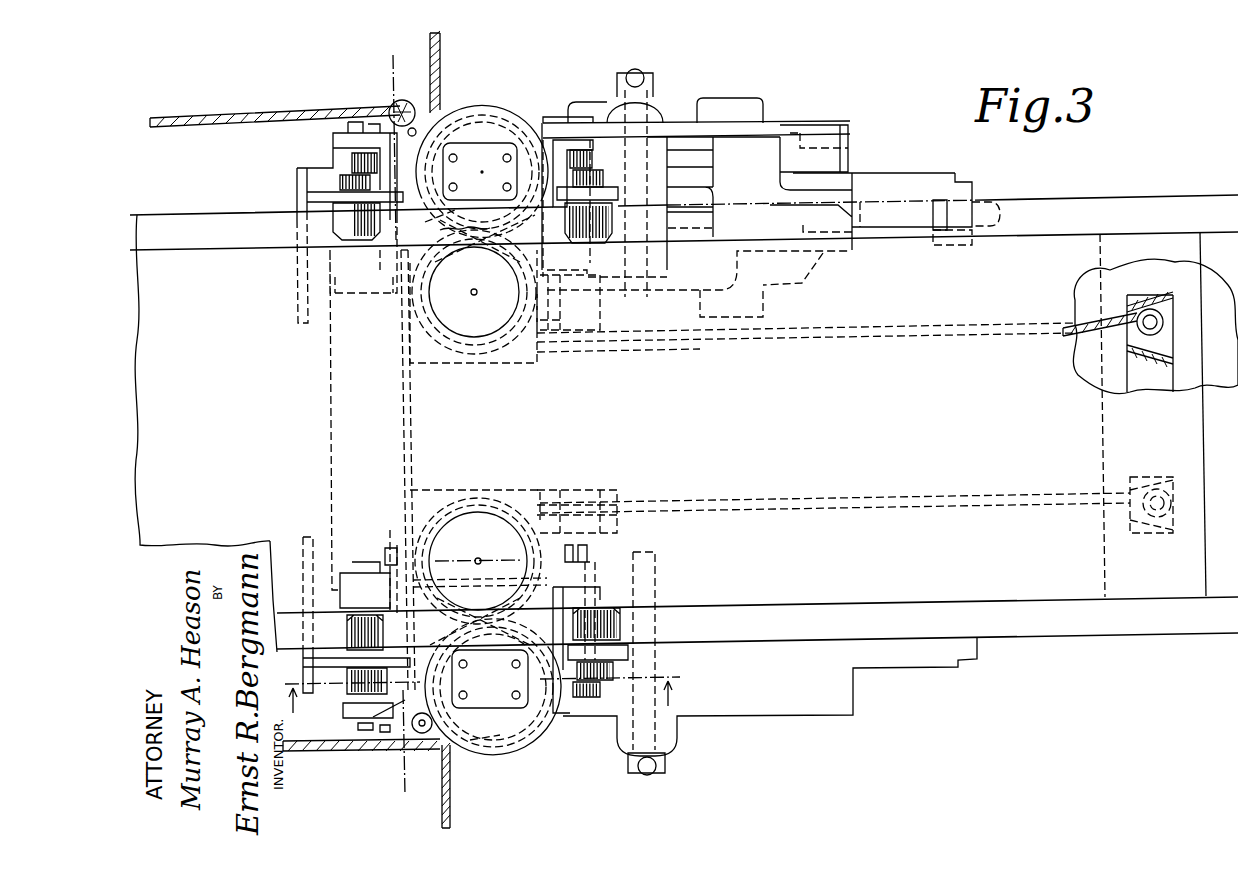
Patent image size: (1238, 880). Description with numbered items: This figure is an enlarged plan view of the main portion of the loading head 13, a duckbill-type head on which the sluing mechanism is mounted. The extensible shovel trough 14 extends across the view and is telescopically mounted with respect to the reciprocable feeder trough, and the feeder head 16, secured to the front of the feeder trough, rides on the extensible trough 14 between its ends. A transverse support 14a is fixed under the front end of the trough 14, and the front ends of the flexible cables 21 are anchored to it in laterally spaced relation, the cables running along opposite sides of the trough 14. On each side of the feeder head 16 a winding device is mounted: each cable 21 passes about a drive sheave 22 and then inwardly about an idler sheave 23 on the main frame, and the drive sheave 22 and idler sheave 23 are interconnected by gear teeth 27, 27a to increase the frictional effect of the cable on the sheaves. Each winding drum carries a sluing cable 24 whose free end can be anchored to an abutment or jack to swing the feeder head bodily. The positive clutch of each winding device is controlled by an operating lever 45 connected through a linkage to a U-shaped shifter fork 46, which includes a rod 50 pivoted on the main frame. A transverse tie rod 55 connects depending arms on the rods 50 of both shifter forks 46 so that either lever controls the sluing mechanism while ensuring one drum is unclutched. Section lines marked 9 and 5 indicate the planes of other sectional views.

The loading head 13 is at (1162, 188).
The extensible shovel trough 14 is at (1083, 202).
The transverse support 14a is at (1187, 380).
The feeder head 16 is at (311, 160).
The flexible cables 21 is at (223, 116).
The drive sheave 22 is at (515, 135).
The idler sheave 23 is at (503, 262).
The sluing cable 24 is at (441, 62).
The gear teeth 27 is at (445, 222).
The gear teeth 27a is at (450, 236).
The operating lever 45 is at (414, 96).
The shifter fork 46 is at (389, 540).
The rod 50 is at (591, 561).
The tie rod 55 is at (410, 437).
The section line 9- 9 is at (381, 70).
The section line 5- 5 is at (482, 704).